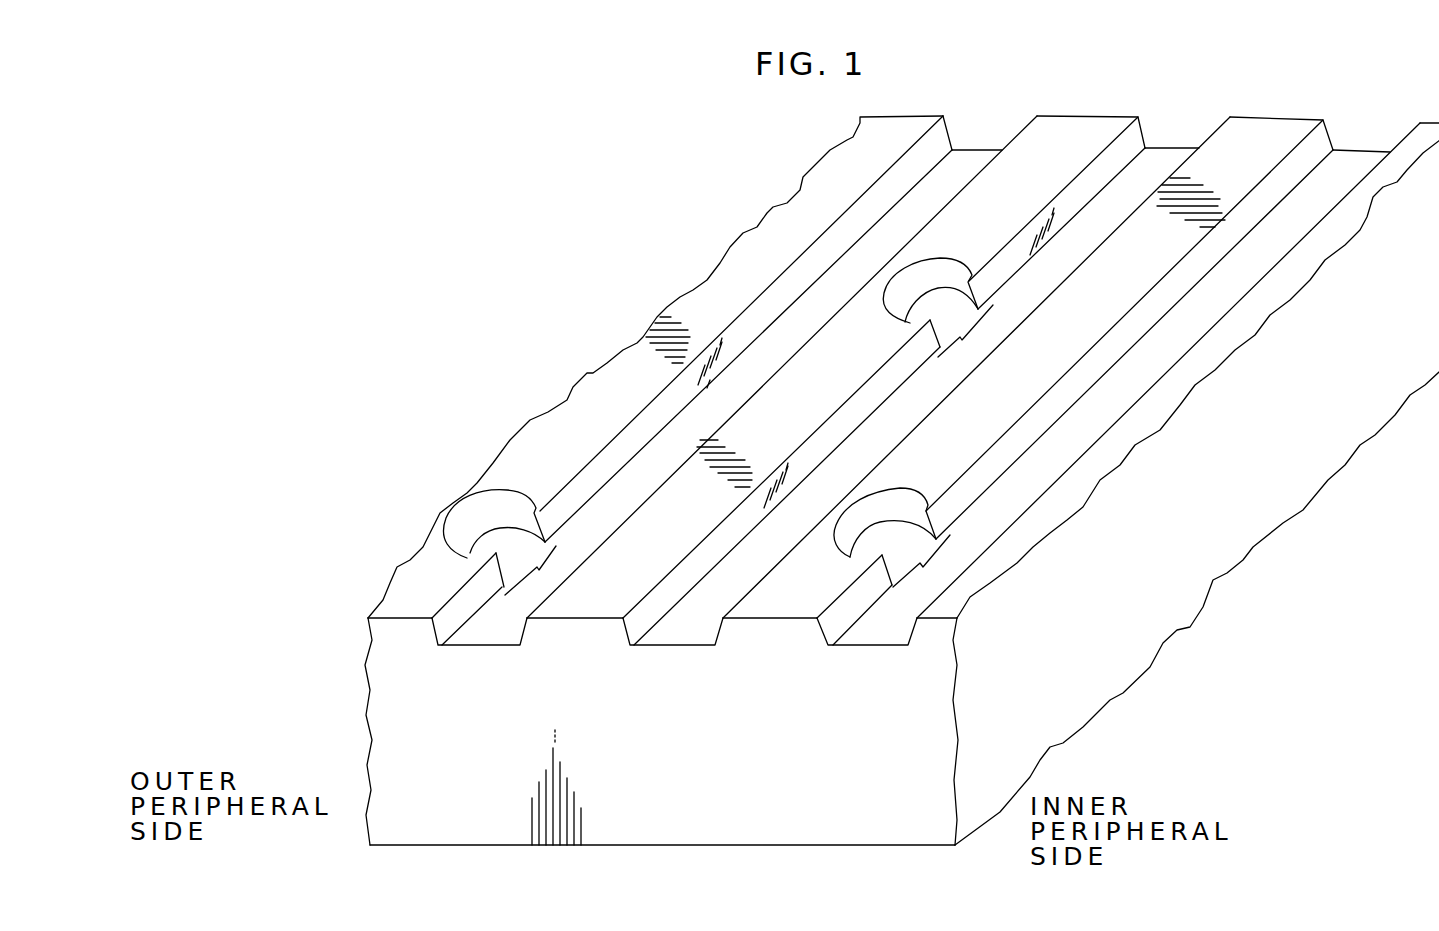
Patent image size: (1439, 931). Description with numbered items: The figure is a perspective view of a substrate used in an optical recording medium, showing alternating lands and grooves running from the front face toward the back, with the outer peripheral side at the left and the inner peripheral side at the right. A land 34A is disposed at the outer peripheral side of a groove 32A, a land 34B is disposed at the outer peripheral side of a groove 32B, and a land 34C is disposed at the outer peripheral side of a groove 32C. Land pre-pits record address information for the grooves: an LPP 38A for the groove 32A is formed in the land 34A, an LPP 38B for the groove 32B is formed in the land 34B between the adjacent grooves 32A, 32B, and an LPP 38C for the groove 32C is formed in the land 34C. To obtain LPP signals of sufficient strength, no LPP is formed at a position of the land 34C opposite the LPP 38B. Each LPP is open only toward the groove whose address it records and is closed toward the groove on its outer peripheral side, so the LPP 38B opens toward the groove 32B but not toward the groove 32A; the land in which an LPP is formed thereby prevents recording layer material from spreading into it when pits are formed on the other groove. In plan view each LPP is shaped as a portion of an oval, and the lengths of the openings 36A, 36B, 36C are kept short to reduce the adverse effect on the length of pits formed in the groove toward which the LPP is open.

The groove 32A is at (734, 411).
The groove 32B is at (926, 411).
The groove 32C is at (1118, 413).
The land 34A is at (630, 367).
The land 34B is at (830, 309).
The land 34C is at (1050, 277).
The opening 36A is at (592, 559).
The opening 36B is at (1027, 325).
The opening 36C is at (993, 561).
The land pre-pit 38A is at (477, 516).
The land pre-pit 38B is at (943, 278).
The land pre-pit 38C is at (896, 516).